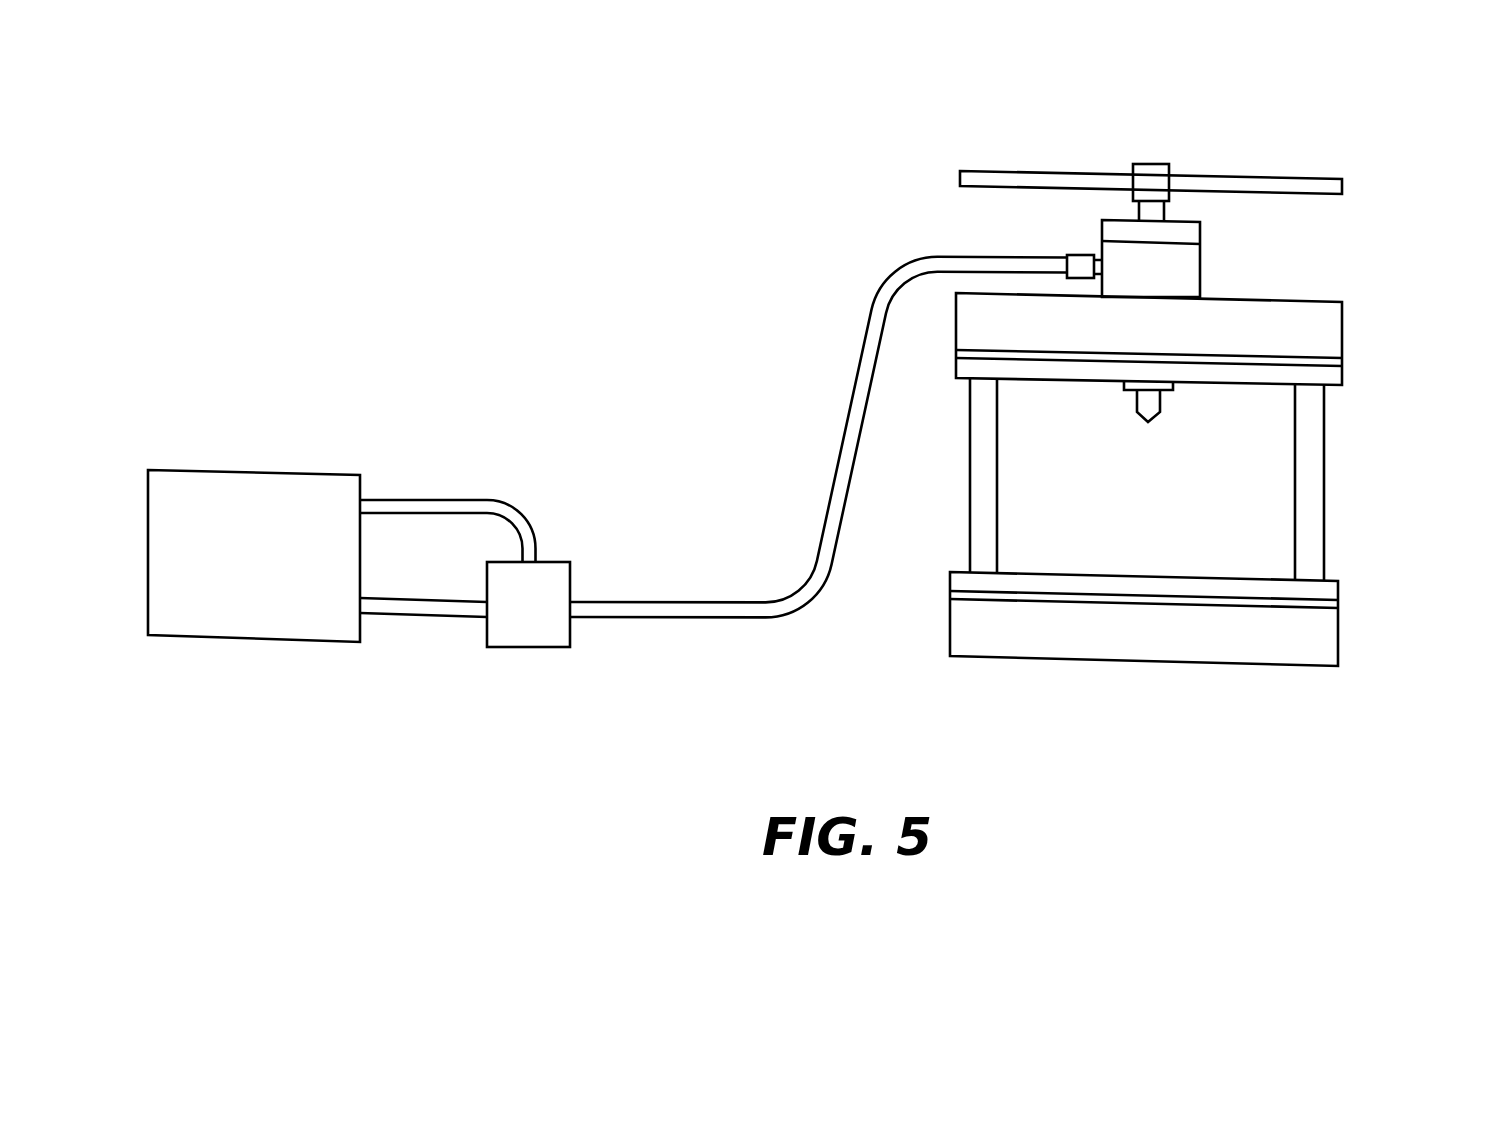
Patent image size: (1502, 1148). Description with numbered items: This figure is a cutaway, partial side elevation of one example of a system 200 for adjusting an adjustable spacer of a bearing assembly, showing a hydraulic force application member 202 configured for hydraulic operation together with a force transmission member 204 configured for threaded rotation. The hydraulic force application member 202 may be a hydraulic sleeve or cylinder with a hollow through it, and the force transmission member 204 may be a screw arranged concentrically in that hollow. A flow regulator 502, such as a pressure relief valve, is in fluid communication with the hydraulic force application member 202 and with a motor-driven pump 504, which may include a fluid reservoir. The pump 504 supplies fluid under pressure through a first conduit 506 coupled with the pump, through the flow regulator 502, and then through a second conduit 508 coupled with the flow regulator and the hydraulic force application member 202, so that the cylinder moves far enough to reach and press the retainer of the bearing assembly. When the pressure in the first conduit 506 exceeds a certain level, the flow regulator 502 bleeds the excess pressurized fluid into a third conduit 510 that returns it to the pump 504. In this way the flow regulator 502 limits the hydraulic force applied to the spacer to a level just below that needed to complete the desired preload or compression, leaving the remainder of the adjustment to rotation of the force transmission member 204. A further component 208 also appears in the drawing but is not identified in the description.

The system 200 is at (370, 611).
The hydraulic force application member 202 is at (1217, 260).
The force transmission member 204 is at (1153, 402).
The press frame 208 is at (1373, 503).
The flow regulator 502 is at (557, 575).
The pump 504 is at (282, 488).
The first conduit 506 is at (428, 607).
The second conduit 508 is at (734, 614).
The third conduit 510 is at (418, 507).